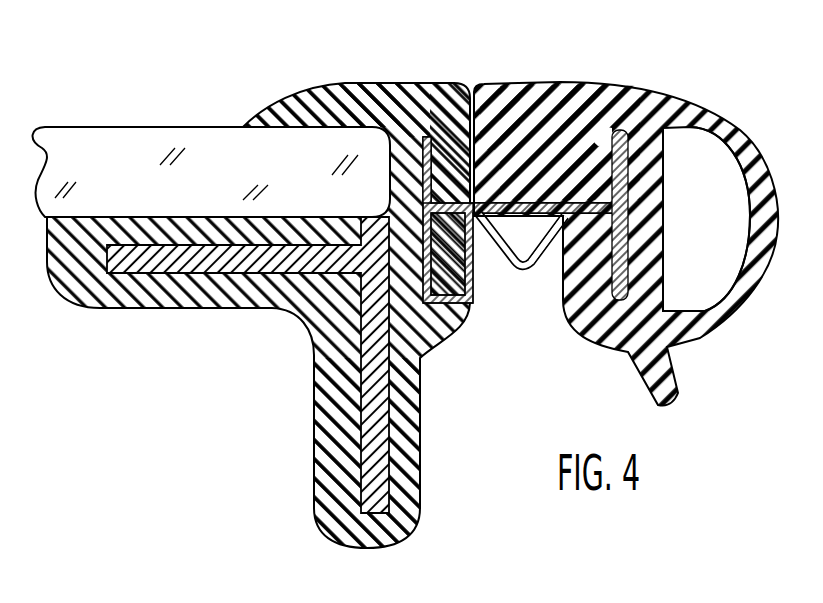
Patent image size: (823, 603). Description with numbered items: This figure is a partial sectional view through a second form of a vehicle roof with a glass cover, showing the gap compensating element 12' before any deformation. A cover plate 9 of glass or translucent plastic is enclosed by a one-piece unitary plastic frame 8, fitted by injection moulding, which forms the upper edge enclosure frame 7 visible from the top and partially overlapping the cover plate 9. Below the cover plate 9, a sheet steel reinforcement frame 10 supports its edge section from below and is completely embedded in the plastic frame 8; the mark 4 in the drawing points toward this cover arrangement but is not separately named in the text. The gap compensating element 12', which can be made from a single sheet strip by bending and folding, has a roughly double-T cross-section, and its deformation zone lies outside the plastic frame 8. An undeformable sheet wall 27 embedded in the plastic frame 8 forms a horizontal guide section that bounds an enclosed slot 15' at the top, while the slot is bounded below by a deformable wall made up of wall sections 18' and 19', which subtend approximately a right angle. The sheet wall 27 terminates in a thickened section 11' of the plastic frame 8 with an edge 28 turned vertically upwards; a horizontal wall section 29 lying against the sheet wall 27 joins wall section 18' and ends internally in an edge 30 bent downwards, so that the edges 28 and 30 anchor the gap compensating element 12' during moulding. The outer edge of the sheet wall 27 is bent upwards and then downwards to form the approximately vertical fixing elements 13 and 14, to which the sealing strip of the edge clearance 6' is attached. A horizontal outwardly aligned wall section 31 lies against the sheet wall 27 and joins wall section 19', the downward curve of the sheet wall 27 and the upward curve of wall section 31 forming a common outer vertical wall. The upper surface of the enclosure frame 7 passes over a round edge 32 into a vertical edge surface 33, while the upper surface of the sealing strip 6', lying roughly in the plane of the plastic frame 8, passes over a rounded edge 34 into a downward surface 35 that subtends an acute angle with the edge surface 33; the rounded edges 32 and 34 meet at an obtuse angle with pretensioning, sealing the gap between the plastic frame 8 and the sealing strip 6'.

The glass pane 4 is at (211, 128).
The cover plate 9 is at (100, 138).
The upper edge enclosure frame 7 is at (262, 275).
The plastic frame 8 is at (311, 80).
The edge 28 is at (400, 115).
The thickened section 11' is at (412, 83).
The round edge 32 is at (455, 84).
The rounded off edge 34 is at (474, 98).
The edge surface 33 is at (498, 130).
The sheet wall 27 is at (548, 135).
The enclosed slot 15' is at (594, 114).
The sealing strip of the edge clearance 6' is at (626, 216).
The fixing element 13 is at (706, 219).
The fixing element 14 is at (664, 258).
The wall section 31 is at (578, 300).
The gap compensating element 12' is at (540, 292).
The wall section 18' is at (521, 266).
The wall section 19' is at (546, 267).
The horizontal wall section 29 is at (477, 277).
The edge 30 is at (378, 284).
The reinforcement frame 10 is at (378, 465).
The surface 35 is at (465, 176).